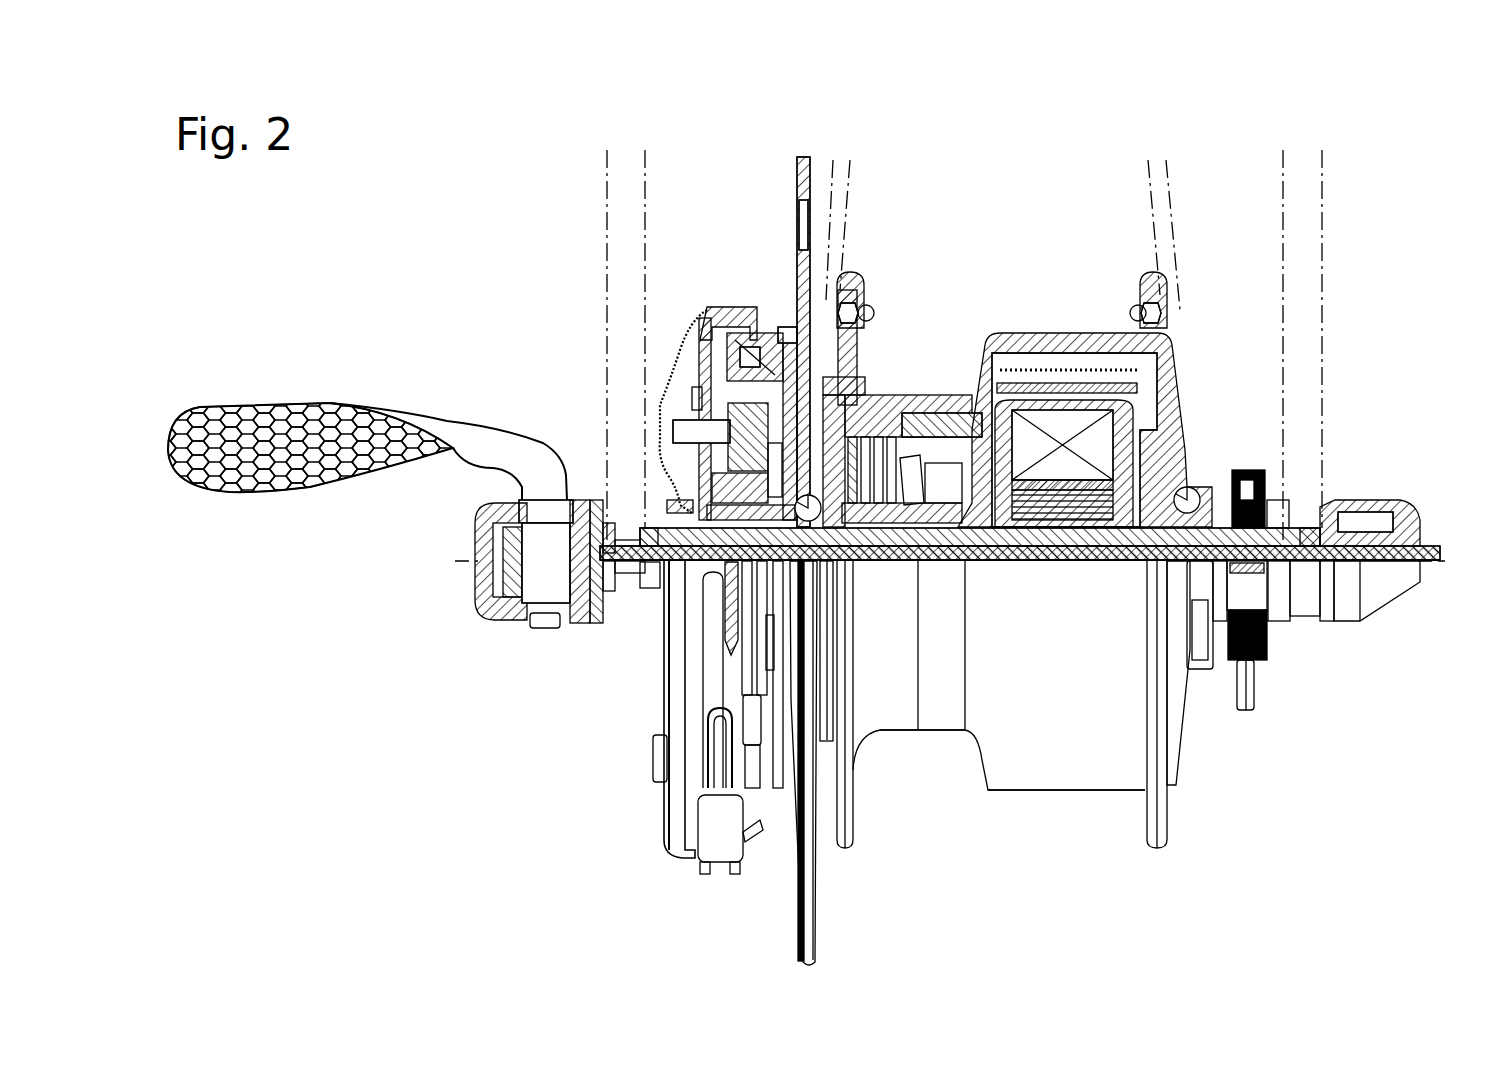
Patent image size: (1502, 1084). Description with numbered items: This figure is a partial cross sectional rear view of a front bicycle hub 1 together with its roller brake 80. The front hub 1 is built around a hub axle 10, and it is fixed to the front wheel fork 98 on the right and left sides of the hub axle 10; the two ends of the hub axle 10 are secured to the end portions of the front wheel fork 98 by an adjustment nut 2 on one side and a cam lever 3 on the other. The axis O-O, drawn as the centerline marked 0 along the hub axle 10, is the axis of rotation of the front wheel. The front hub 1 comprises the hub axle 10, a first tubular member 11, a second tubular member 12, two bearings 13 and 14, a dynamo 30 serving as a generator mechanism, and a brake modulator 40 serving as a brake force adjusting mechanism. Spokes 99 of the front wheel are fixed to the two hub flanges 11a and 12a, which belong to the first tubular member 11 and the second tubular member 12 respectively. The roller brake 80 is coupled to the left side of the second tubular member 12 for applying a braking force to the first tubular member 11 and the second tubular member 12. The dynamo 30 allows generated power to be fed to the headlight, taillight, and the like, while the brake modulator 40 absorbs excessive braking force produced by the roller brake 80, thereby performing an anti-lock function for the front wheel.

The front hub 1 is at (1015, 217).
The adjustment nut 2 is at (1380, 500).
The cam lever 3 is at (254, 418).
The hub axle 10 is at (1042, 562).
The first tubular member 11 is at (1052, 330).
The hub flange 11a is at (1158, 808).
The second tubular member 12 is at (869, 366).
The hub flange 12a is at (860, 300).
The bearing 13 is at (750, 378).
The bearing 14 is at (1193, 487).
The dynamo 30 is at (1068, 757).
The brake modulator 40 is at (888, 617).
The roller brake 80 is at (738, 300).
The front wheel fork 98 is at (607, 327).
The spokes 99 is at (850, 245).
The axis O-O 0 is at (943, 562).